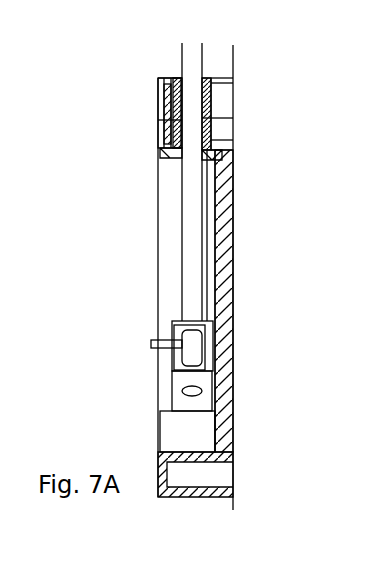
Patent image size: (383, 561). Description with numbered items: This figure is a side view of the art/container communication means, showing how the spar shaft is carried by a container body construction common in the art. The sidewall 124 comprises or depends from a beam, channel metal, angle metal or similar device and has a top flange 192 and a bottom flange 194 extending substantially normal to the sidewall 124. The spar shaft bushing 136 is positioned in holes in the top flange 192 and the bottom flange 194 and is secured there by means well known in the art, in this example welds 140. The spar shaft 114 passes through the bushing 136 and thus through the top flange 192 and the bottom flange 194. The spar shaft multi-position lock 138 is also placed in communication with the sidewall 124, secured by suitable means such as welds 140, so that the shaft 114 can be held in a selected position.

The spar shaft 114 is at (180, 209).
The sidewall 124 is at (223, 265).
The spar shaft bushing 136 is at (155, 114).
The spar shaft multi-position lock 138 is at (187, 354).
The welds 140 is at (152, 76).
The top flange 192 is at (152, 72).
The bottom flange 194 is at (157, 142).